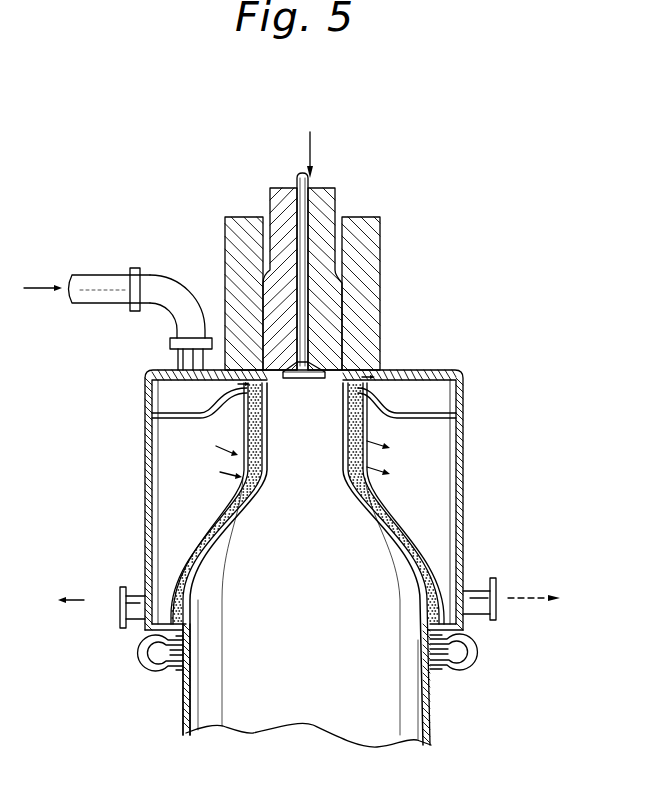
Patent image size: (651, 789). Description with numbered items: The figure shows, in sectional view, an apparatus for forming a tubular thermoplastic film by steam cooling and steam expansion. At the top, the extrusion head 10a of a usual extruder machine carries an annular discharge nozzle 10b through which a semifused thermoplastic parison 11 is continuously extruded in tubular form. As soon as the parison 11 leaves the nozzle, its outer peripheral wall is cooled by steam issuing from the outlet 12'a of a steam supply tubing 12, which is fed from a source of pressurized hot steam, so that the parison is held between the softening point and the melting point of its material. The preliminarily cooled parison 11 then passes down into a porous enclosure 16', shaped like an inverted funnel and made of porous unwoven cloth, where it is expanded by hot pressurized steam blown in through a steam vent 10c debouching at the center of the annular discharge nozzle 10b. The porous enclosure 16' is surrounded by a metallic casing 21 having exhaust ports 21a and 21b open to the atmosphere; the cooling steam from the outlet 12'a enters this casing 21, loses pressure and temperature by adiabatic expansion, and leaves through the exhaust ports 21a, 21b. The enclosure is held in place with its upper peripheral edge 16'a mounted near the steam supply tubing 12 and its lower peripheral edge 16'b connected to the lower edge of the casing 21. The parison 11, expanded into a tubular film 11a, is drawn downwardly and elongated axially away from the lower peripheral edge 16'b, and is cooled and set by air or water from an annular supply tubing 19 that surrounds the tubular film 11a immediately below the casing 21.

The extrusion head 10a is at (384, 265).
The annular discharge nozzle 10b is at (225, 330).
The steam vent 10c is at (302, 379).
The parison 11 is at (268, 446).
The tubular film 11a is at (183, 707).
The outlet of steam supply tubing 12'a is at (305, 502).
The steam supply tubing 12 is at (407, 422).
The upper peripheral edge of porous enclosure 16'a is at (199, 419).
The porous enclosure 16' is at (312, 499).
The lower peripheral edge of porous enclosure 16'b is at (209, 503).
The annular air (or water) supply tubing 19 is at (143, 673).
The metallic casing 21 is at (468, 483).
The exhaust port 21a is at (128, 587).
The exhaust port 21b is at (477, 586).